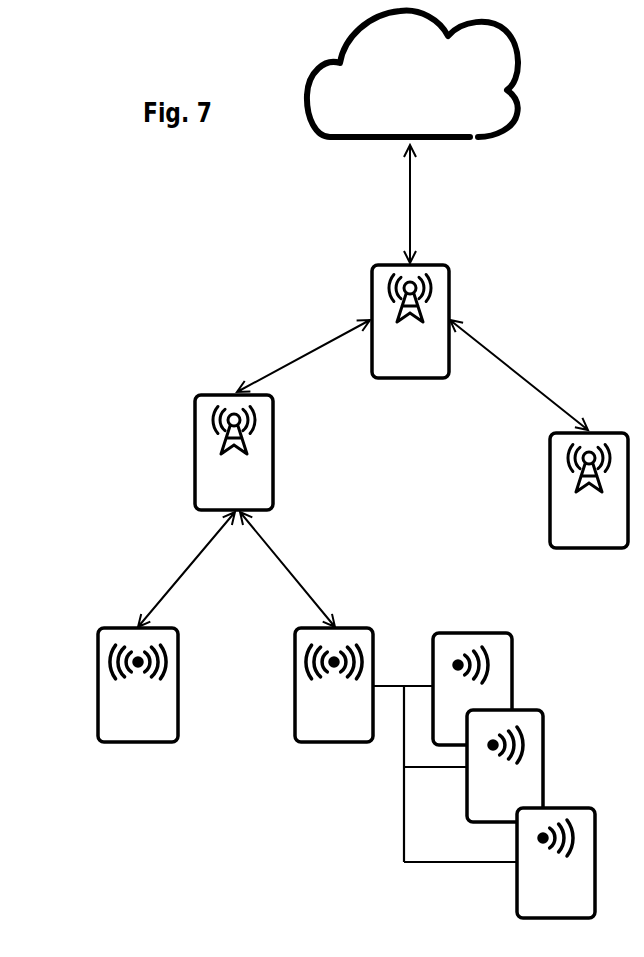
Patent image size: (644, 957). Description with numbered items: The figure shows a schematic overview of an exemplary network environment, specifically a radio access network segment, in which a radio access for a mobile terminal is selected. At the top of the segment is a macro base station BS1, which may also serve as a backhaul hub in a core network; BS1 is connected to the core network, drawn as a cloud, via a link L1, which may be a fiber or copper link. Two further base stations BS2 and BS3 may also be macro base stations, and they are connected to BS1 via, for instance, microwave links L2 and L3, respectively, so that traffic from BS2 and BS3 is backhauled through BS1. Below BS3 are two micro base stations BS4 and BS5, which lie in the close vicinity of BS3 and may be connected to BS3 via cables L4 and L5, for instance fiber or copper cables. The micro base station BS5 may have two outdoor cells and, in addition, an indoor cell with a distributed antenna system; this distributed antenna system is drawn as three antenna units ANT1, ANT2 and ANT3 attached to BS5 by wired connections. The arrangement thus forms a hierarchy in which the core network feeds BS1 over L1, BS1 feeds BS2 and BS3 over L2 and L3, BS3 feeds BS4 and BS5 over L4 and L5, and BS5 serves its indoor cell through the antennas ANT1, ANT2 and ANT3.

The macro base station BS1 is at (410, 321).
The macro base station BS2 is at (589, 490).
The macro base station BS3 is at (234, 452).
The micro base station BS4 is at (138, 685).
The micro base station BS5 is at (334, 685).
The first antenna ANT1 is at (472, 689).
The second antenna ANT2 is at (505, 766).
The third antenna ANT3 is at (556, 863).
The link L1 is at (431, 204).
The microwave link L2 is at (519, 375).
The microwave link L3 is at (303, 356).
The cable L4 is at (186, 569).
The cable L5 is at (288, 569).